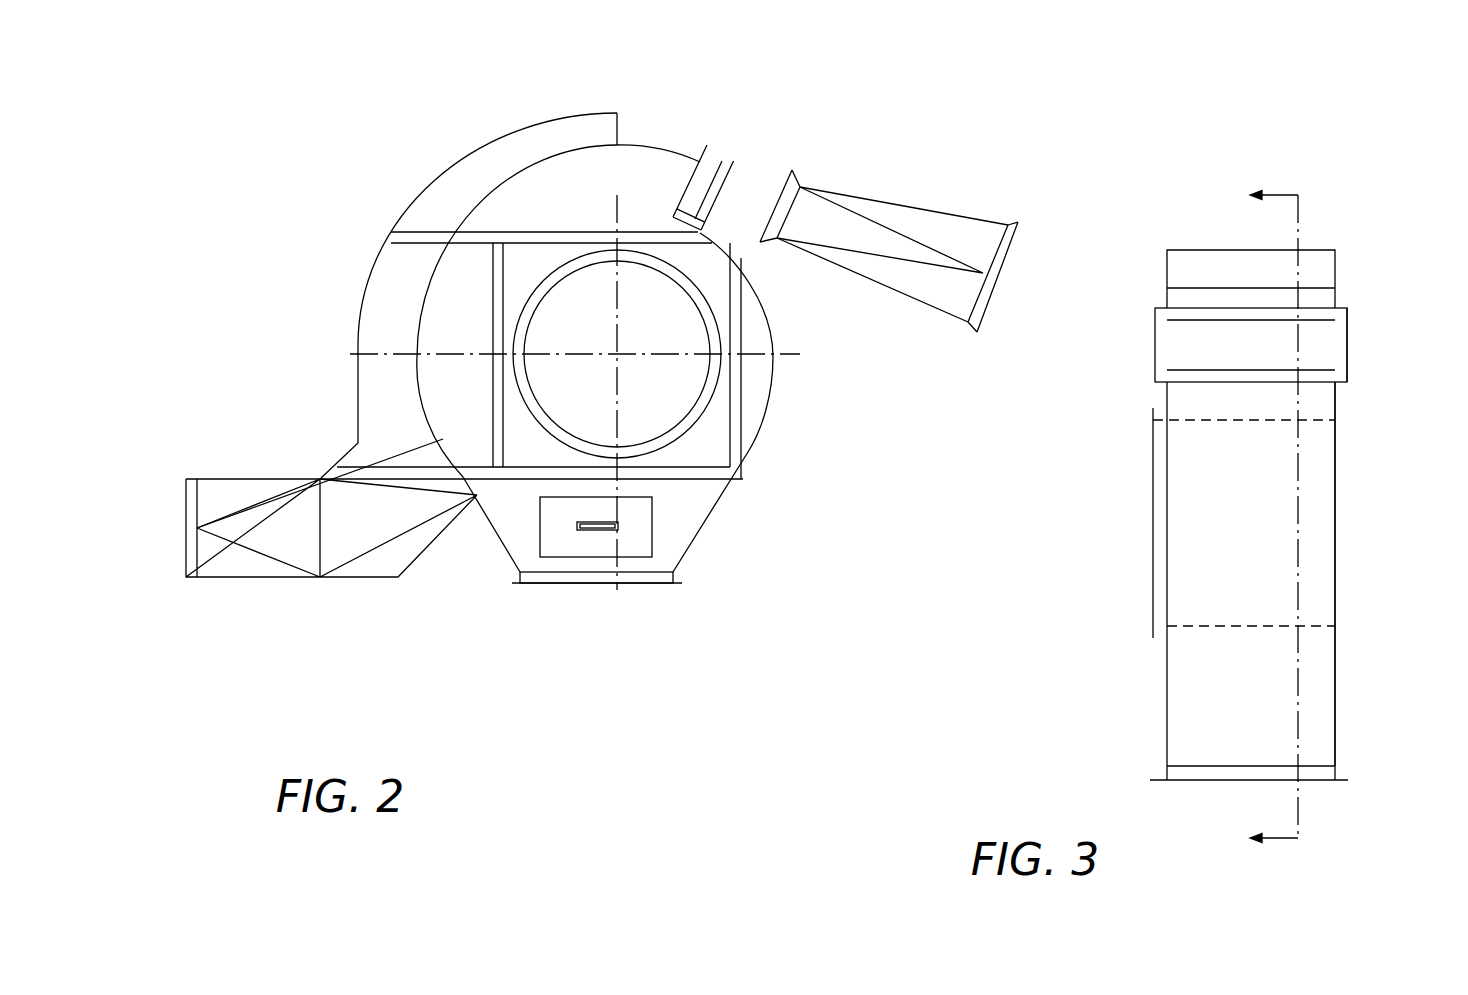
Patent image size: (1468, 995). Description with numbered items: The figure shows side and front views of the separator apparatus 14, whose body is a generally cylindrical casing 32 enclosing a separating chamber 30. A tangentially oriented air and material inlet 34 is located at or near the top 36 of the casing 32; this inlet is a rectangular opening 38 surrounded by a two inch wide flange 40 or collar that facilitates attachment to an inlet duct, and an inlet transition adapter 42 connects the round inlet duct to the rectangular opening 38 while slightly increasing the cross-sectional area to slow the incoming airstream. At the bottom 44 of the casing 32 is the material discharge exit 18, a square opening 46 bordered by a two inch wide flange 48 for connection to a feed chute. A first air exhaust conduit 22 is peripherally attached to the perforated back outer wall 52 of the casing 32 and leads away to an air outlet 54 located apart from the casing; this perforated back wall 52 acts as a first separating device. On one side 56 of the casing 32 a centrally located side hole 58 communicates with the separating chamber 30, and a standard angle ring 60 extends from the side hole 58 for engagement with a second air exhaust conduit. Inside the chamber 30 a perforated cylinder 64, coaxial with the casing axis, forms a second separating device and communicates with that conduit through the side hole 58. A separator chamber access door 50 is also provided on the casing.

In FIG. 2, the separator apparatus 14 is at (270, 178).
In FIG. 3, the separator apparatus 14 is at (1358, 114).
In FIG. 2, the material discharge exit 18 is at (607, 583).
In FIG. 3, the material discharge exit 18 is at (1210, 775).
In FIG. 2, the first air exhaust conduit 22 is at (380, 323).
In FIG. 3, the first air exhaust conduit 22 is at (1329, 262).
In FIG. 2, the separating chamber 30 is at (625, 424).
In FIG. 2, the cylindrical casing 32 is at (775, 392).
In FIG. 3, the cylindrical casing 32 is at (1335, 698).
In FIG. 2, the air and material inlet 34 is at (720, 185).
In FIG. 3, the air and material inlet 34 is at (1187, 342).
In FIG. 2, the top 36 is at (640, 143).
In FIG. 2, the rectangular opening 38 is at (745, 197).
In FIG. 3, the rectangular opening 38 is at (1264, 357).
In FIG. 2, the flange 40 is at (725, 180).
In FIG. 3, the flange 40 is at (1348, 340).
In FIG. 2, the inlet transition adapter 42 is at (944, 220).
In FIG. 2, the bottom 44 is at (513, 568).
In FIG. 2, the opening 46 is at (585, 604).
In FIG. 3, the opening 46 is at (1316, 794).
In FIG. 2, the flange 48 is at (678, 583).
In FIG. 3, the flange 48 is at (1157, 780).
In FIG. 2, the separator chamber access door 50 is at (637, 537).
In FIG. 2, the perforated back outer wall 52 is at (437, 256).
In FIG. 2, the air outlet 54 is at (175, 527).
In FIG. 2, the side 56 is at (481, 350).
In FIG. 2, the side hole 58 is at (674, 413).
In FIG. 3, the side hole 58 is at (1118, 522).
In FIG. 2, the angle ring 60 is at (720, 333).
In FIG. 3, the angle ring 60 is at (1153, 408).
In FIG. 3, the perforated cylinder 64 is at (1212, 627).